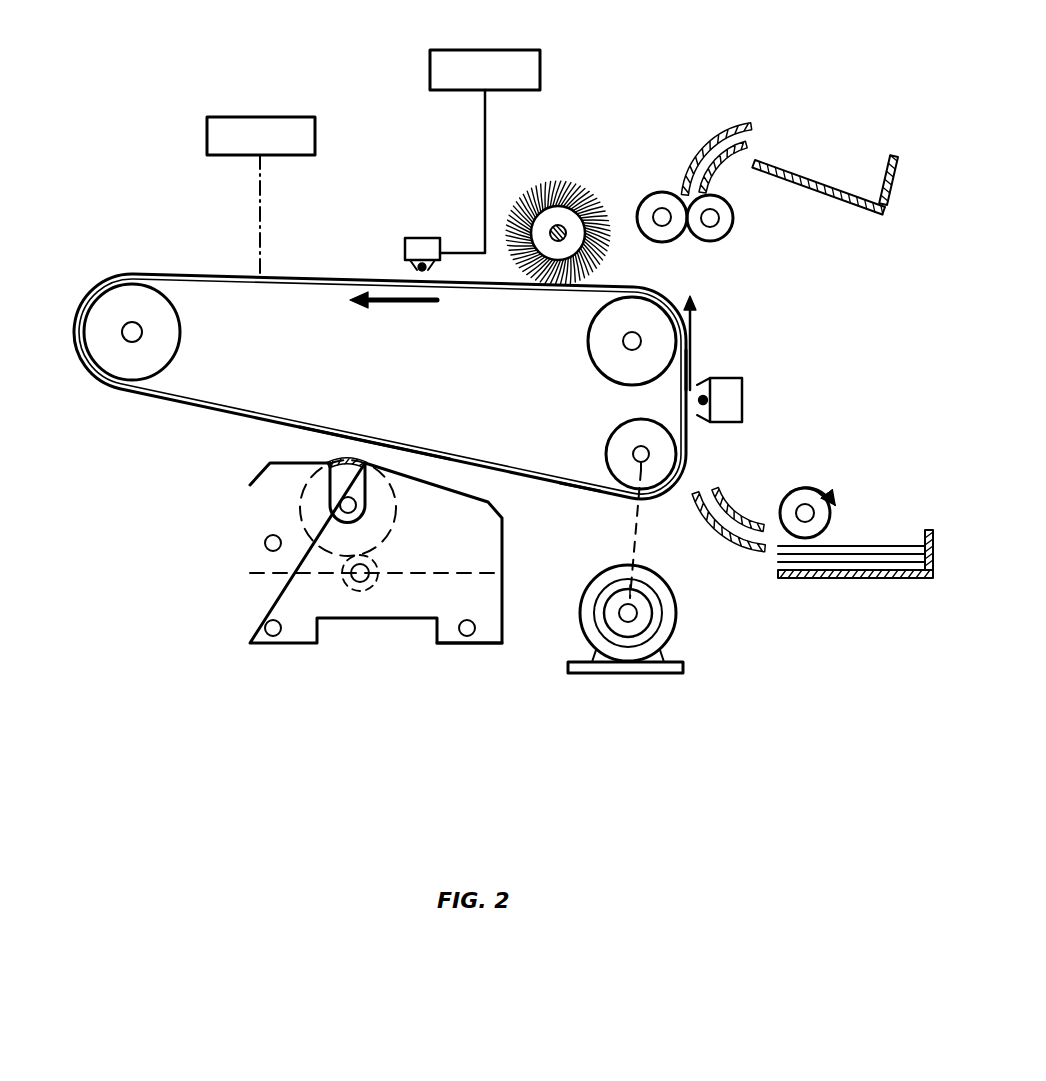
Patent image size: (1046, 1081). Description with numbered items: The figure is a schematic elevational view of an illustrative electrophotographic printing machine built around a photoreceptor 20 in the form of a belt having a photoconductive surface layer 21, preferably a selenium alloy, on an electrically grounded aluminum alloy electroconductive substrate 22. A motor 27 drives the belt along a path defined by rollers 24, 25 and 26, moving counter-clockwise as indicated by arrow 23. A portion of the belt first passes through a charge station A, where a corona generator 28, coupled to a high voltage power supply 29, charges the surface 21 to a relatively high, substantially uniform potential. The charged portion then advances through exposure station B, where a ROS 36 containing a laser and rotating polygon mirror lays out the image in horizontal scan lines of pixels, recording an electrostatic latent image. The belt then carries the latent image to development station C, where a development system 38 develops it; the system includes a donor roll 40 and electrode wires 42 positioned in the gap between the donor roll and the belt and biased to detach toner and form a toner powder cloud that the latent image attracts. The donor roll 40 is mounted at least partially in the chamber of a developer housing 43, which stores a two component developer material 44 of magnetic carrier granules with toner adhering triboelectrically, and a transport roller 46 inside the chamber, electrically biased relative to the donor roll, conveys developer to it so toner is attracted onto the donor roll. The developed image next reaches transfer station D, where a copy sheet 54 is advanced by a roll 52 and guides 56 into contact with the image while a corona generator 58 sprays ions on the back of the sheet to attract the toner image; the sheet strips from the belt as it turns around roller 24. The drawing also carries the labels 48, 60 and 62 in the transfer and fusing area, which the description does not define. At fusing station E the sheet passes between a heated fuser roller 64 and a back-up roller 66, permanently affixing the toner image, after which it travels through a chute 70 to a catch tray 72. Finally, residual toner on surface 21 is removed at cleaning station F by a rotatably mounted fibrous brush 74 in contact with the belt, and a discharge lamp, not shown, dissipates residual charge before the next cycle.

The photoreceptor 20 is at (508, 315).
The photoconductive surface layer 21 is at (575, 490).
The electroconductive substrate 22 is at (310, 427).
The arrow 23 is at (410, 305).
The roller 24 is at (600, 358).
The roller 25 is at (172, 336).
The roller 26 is at (625, 448).
The motor 27 is at (697, 615).
The corona generator 28 is at (430, 225).
The high voltage power supply 29 is at (518, 52).
The ROS 36 is at (290, 117).
The development system 38 is at (355, 570).
The donor roll 40 is at (313, 455).
The electrode wires 42 is at (370, 461).
The developer housing 43 is at (485, 644).
The developer material 44 is at (470, 571).
The transport roller 46 is at (345, 605).
The transfer region 48 is at (690, 368).
The roll 52 is at (815, 498).
The copy sheet 54 is at (858, 578).
The guides 56 is at (727, 517).
The corona generator 58 is at (742, 398).
The sheet path arrow 60 is at (693, 322).
The fuser assembly 62 is at (719, 240).
The fuser roller 64 is at (645, 236).
The back-up roller 66 is at (735, 212).
The chute 70 is at (705, 140).
The catch tray 72 is at (822, 175).
The fibrous brush 74 is at (548, 185).
The charge station A is at (565, 62).
The exposure station B is at (285, 245).
The development station C is at (232, 533).
The transfer station D is at (745, 350).
The fusing station E is at (662, 178).
The cleaning station F is at (605, 168).